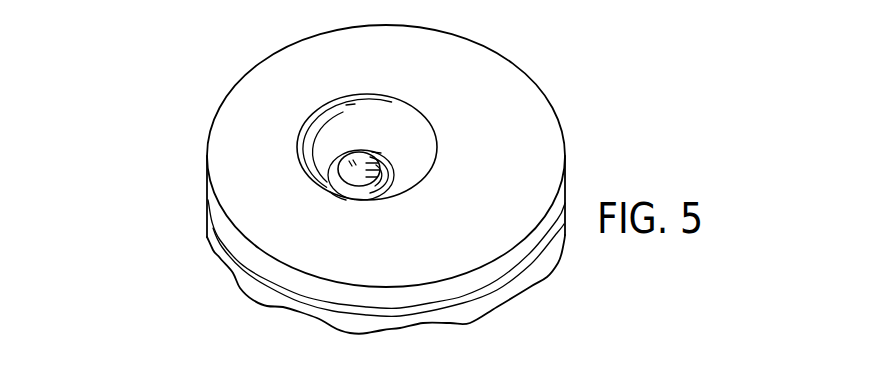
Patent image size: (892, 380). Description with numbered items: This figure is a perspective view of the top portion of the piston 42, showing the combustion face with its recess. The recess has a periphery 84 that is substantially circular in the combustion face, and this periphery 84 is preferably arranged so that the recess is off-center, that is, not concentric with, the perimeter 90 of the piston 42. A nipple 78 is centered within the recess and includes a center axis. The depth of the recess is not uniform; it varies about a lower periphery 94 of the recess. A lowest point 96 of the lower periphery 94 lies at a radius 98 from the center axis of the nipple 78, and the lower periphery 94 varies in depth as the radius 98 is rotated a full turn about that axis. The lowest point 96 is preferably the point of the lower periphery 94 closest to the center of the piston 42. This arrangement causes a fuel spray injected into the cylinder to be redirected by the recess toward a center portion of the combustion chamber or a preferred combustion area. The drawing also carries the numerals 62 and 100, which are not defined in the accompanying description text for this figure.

The piston 42 is at (652, 93).
The top wall 62 is at (483, 173).
The perimeter 90 is at (563, 123).
The periphery 84 is at (317, 110).
The lower periphery 94 is at (336, 157).
The nipple 78 is at (372, 152).
The lowest point 96 is at (379, 157).
The radius 98 is at (380, 187).
The rib 100 is at (327, 185).